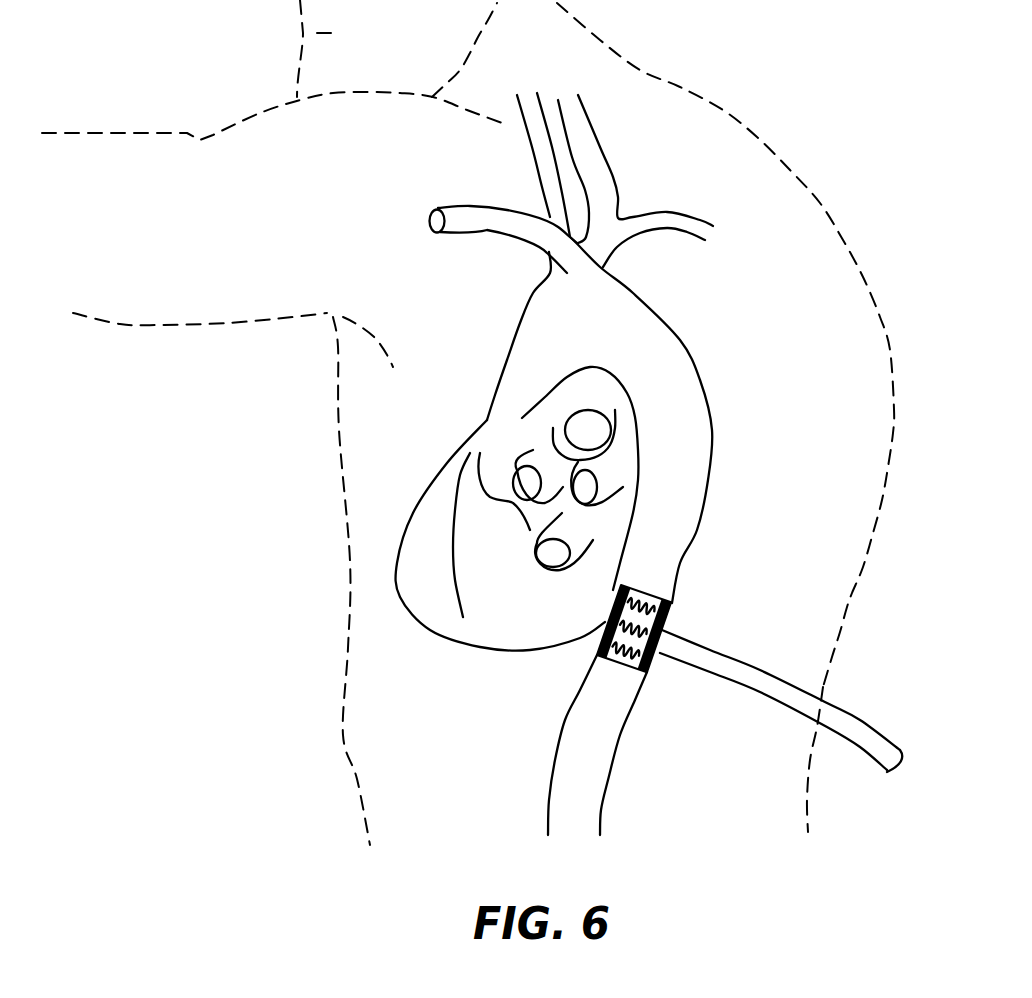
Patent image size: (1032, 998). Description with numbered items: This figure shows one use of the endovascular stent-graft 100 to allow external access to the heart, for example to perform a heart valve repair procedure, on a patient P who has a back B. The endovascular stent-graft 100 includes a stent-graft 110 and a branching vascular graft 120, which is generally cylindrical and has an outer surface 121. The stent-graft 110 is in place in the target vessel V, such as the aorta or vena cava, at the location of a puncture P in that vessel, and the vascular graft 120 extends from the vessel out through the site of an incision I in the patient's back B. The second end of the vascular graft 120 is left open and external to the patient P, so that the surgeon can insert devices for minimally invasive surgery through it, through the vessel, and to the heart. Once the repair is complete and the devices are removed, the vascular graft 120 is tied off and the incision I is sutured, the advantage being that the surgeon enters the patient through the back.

The endovascular stent-graft 100 is at (749, 658).
The stent-graft 110 is at (652, 588).
The vascular graft 120 is at (781, 688).
The outer surface 121 is at (703, 672).
The patient P is at (677, 82).
The back B is at (848, 605).
The incision I is at (822, 695).
The target vessel V is at (617, 737).